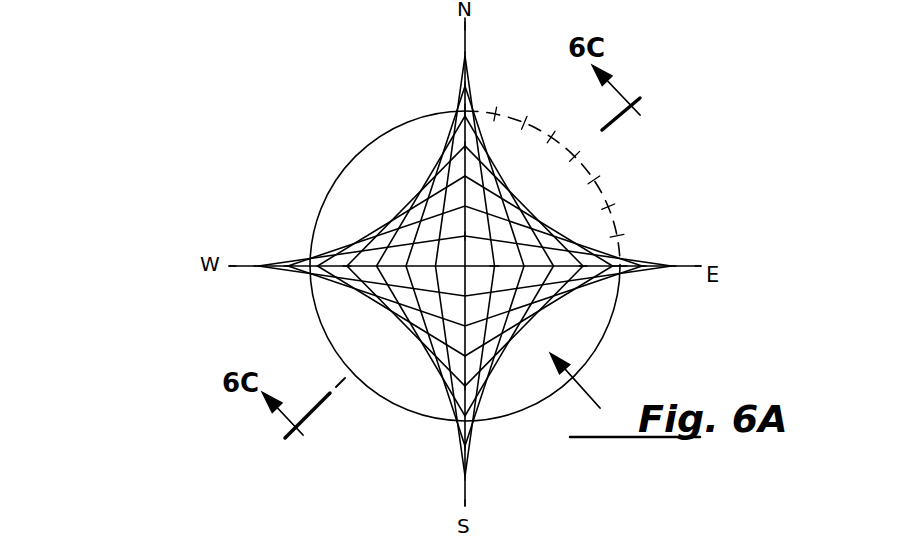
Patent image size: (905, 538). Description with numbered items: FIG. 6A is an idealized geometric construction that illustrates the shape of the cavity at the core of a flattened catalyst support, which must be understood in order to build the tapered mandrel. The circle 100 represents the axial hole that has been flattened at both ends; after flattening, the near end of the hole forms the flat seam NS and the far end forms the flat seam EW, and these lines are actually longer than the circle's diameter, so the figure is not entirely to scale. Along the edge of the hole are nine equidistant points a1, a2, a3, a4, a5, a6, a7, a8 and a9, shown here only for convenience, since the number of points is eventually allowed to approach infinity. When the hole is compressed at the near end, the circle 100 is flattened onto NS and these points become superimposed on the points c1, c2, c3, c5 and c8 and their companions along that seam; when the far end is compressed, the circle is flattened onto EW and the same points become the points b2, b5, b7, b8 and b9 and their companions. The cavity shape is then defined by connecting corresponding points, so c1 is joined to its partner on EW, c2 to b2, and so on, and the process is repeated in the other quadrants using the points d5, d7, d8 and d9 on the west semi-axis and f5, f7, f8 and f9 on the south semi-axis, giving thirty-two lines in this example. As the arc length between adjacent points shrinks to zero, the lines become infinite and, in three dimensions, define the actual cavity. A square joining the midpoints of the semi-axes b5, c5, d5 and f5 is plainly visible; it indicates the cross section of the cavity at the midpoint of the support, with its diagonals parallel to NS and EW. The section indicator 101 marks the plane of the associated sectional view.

The circle 100 is at (345, 165).
The section line indicator 101 is at (590, 394).
The point a1 is at (467, 108).
The point a2 is at (508, 99).
The point a3 is at (537, 107).
The point a4 is at (563, 122).
The point a5 is at (589, 142).
The point a6 is at (610, 168).
The point a7 is at (623, 200).
The point a8 is at (631, 233).
The point a9 is at (628, 263).
The point b2 is at (495, 263).
The point b5 is at (583, 272).
The point b7 is at (642, 273).
The point b8 is at (673, 277).
The point b9 is at (702, 277).
The point c1 is at (463, 24).
The point c2 is at (464, 55).
The point c3 is at (464, 87).
The point c5 is at (464, 147).
The point c8 is at (467, 234).
The point d5 is at (345, 269).
The point d7 is at (288, 269).
The point d8 is at (260, 268).
The point d9 is at (227, 268).
The point f5 is at (465, 384).
The point f7 is at (465, 445).
The point f8 is at (466, 473).
The point f9 is at (466, 505).